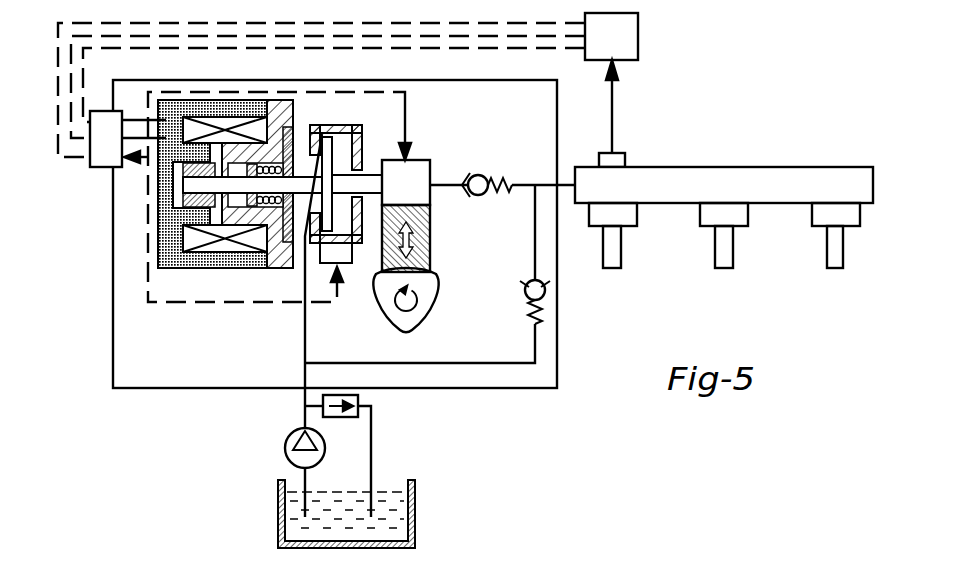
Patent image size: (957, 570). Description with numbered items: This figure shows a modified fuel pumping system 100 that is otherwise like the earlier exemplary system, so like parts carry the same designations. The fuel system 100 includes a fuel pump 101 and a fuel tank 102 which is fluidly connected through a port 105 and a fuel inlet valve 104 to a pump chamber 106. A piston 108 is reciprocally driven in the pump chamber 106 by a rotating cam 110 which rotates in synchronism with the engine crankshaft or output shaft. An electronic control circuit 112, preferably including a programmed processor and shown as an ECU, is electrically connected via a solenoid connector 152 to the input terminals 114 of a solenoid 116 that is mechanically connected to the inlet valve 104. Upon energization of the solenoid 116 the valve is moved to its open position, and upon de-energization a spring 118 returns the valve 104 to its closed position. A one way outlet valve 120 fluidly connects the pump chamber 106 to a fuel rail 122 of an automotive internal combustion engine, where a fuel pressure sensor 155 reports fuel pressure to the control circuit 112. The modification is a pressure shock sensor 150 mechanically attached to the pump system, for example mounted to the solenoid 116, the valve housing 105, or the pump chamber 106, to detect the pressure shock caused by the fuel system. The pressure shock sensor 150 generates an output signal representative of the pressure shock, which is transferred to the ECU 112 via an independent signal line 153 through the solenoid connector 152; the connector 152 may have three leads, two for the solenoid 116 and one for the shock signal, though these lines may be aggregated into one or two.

The fuel pumping system 100 is at (692, 90).
The fuel pump 101 is at (207, 388).
The fuel tank 102 is at (415, 515).
The fuel inlet valve 104 is at (335, 178).
The port 105 is at (305, 240).
The pump chamber 106 is at (410, 160).
The piston 108 is at (430, 243).
The rotating cam 110 is at (432, 318).
The electronic control circuit 112 is at (640, 33).
The input terminals 114 is at (132, 118).
The solenoid 116 is at (222, 268).
The spring 118 is at (270, 170).
The one way outlet valve 120 is at (476, 170).
The fuel rail 122 is at (708, 165).
The pressure shock sensor 150 is at (342, 266).
The solenoid connector 152 is at (100, 168).
The independent signal line 153 is at (297, 23).
The fuel pressure sensor 155 is at (628, 152).